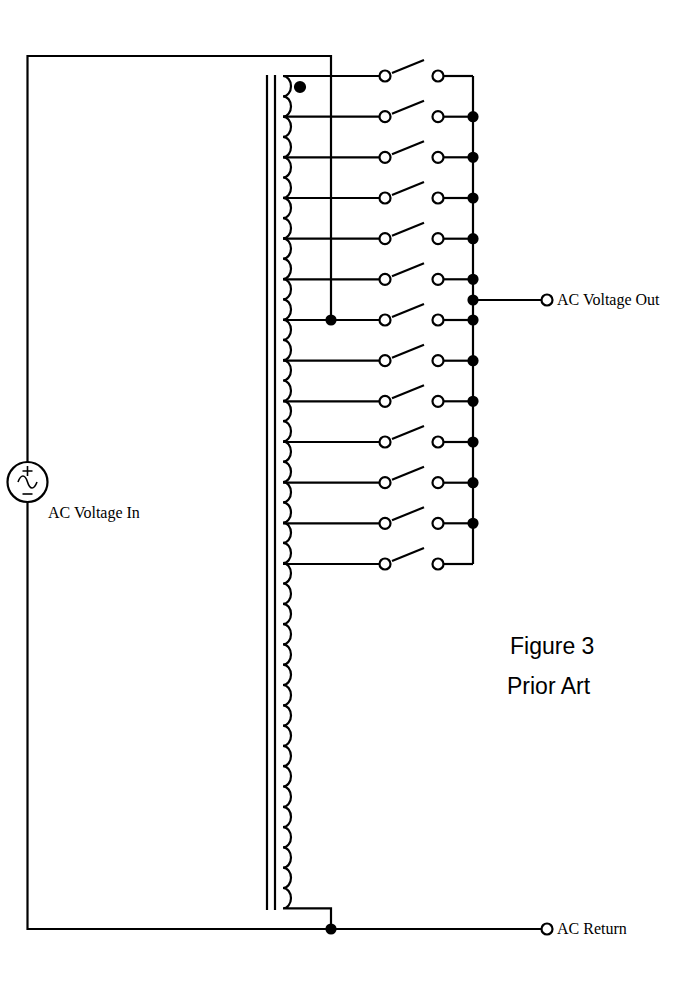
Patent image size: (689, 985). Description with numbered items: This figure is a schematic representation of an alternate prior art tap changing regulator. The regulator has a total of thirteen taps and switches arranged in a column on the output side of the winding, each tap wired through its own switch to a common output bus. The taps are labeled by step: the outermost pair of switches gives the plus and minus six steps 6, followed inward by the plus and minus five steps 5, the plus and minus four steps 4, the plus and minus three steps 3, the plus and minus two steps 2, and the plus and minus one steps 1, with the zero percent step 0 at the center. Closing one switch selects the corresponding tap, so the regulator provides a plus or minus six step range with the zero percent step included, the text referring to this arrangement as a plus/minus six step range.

The tap switch for +6/−6 steps 6 is at (378, 306).
The tap switch for +5/−5 steps 5 is at (380, 306).
The tap switch for +4/−4 steps 4 is at (380, 306).
The tap switch for +3/−3 steps 3 is at (380, 306).
The tap switch for +2/−2 steps 2 is at (380, 306).
The tap switch for +1/−1 steps 1 is at (380, 306).
The tap switch for 0% step 0 is at (380, 306).